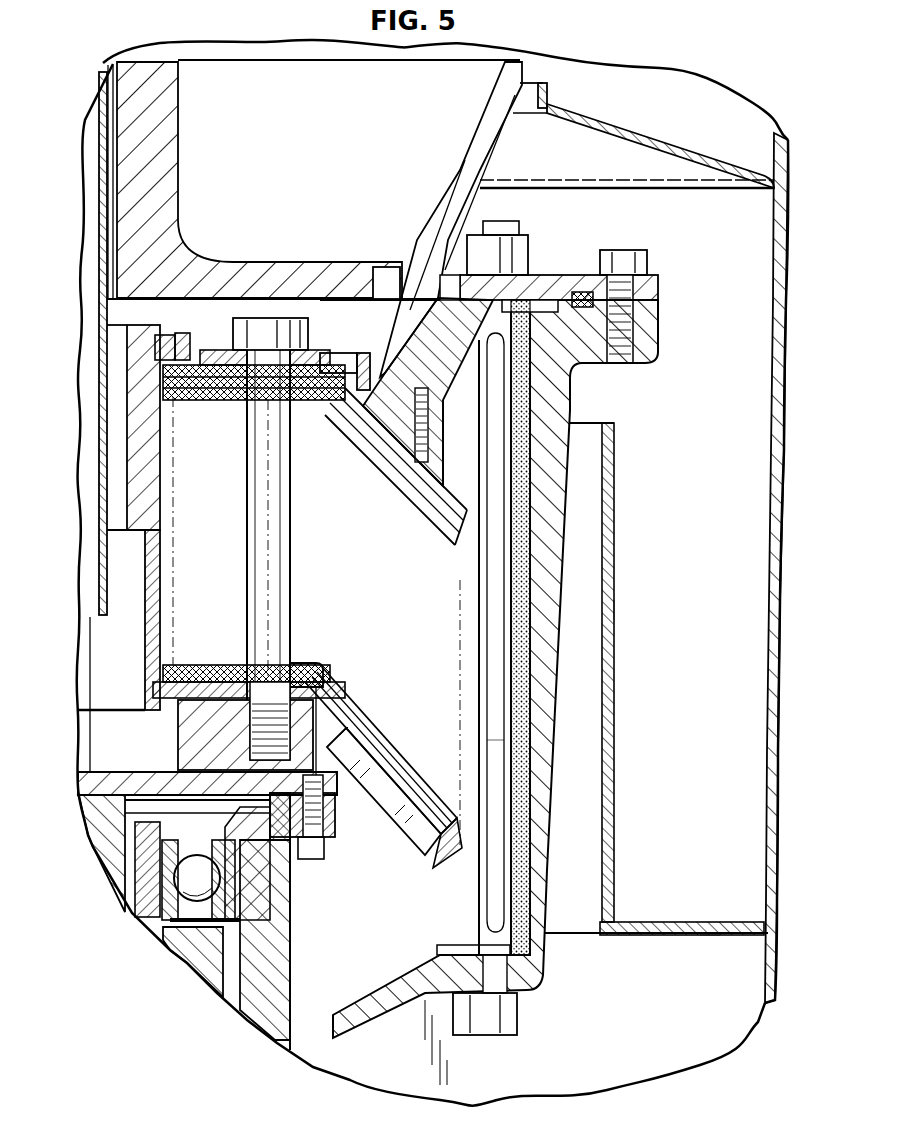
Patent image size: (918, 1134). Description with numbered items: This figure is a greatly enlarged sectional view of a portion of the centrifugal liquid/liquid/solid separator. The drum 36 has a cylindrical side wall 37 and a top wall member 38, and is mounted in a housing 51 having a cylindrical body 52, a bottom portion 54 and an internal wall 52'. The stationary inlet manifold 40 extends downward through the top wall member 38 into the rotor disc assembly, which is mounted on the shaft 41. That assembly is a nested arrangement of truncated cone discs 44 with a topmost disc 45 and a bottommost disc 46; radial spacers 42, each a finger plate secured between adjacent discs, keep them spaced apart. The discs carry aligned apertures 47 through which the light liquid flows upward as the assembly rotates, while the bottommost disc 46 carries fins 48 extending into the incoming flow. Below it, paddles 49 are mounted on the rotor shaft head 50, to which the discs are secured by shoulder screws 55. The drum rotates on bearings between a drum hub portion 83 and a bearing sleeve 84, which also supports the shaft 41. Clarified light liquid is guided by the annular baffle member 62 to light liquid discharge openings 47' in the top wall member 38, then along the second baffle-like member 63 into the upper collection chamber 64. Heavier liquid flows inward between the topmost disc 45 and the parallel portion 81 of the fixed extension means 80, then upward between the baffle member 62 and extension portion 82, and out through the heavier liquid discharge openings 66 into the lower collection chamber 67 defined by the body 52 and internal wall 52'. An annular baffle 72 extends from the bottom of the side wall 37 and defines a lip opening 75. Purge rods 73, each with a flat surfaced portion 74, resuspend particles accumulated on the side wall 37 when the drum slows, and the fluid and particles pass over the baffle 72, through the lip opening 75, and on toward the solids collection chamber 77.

The drum 36 is at (556, 748).
The cylindrical side wall 37 is at (540, 800).
The top wall member 38 is at (250, 268).
The stationary inlet manifold 40 is at (98, 405).
The shaft 41 is at (150, 495).
The radial spacers 42 is at (432, 530).
The truncated cone discs 44 is at (416, 500).
The topmost disc 45 is at (220, 350).
The bottommost disc 46 is at (425, 870).
The apertures 47 is at (347, 544).
The light liquid discharge openings 47' is at (378, 260).
The fins 48 is at (395, 835).
The paddles 49 is at (82, 722).
The rotor shaft head 50 is at (110, 773).
The housing 51 is at (735, 1020).
The cylindrical body 52 is at (776, 1015).
The internal wall 52' is at (656, 679).
The bottom portion 54 is at (775, 708).
The shoulder screws 55 is at (256, 550).
The annular baffle member 62 is at (406, 328).
The second baffle-like member 63 is at (468, 172).
The upper collection chamber 64 is at (685, 113).
The heavier liquid discharge openings 66 is at (466, 320).
The lower collection chamber 67 is at (708, 518).
The annular baffle 72 is at (388, 1008).
The purge rods 73 is at (515, 648).
The flat surfaced portion 74 is at (492, 738).
The lip opening 75 is at (332, 1035).
The solids collection chamber 77 is at (626, 1016).
The extension means 80 is at (448, 396).
The parallel portion 81 is at (440, 450).
The extension portion 82 is at (455, 372).
The drum hub portion 83 is at (273, 1040).
The bearing sleeve 84 is at (193, 978).